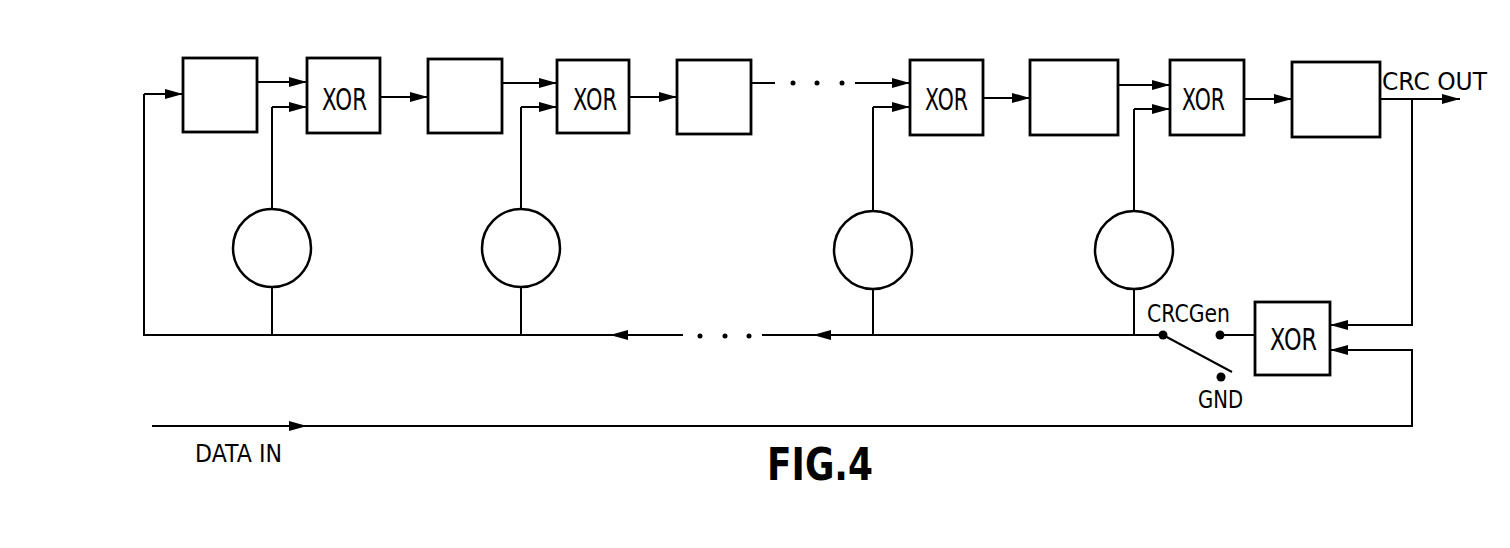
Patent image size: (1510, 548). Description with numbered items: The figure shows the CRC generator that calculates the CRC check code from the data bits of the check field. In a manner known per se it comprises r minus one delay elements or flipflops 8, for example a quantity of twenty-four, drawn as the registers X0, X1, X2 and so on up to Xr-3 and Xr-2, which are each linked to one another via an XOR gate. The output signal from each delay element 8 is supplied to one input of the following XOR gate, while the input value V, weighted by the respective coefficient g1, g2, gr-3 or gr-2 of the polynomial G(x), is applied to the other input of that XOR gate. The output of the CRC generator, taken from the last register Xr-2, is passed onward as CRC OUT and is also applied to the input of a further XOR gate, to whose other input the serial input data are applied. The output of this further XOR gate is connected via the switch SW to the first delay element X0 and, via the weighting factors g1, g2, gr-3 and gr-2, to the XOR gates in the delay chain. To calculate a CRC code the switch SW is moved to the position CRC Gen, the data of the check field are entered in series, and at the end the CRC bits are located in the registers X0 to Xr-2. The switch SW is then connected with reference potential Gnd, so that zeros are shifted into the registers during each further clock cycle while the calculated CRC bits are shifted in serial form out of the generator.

The delay elements or flipflops 8 is at (781, 75).
The weighting factor g1 is at (272, 248).
The weighting factor g2 is at (521, 248).
The weighting factor gr−3 gr-3 is at (873, 250).
The weighting factor gr−2 gr-2 is at (1134, 250).
The first delay element x0 X0 is at (220, 95).
The delay element x1 X1 is at (465, 96).
The delay element x2 X2 is at (714, 97).
The delay element xr−3 Xr-3 is at (1074, 97).
The last delay element xr−2 Xr-2 is at (1336, 99).
The switch sw SW is at (1203, 357).
The input value V is at (646, 317).